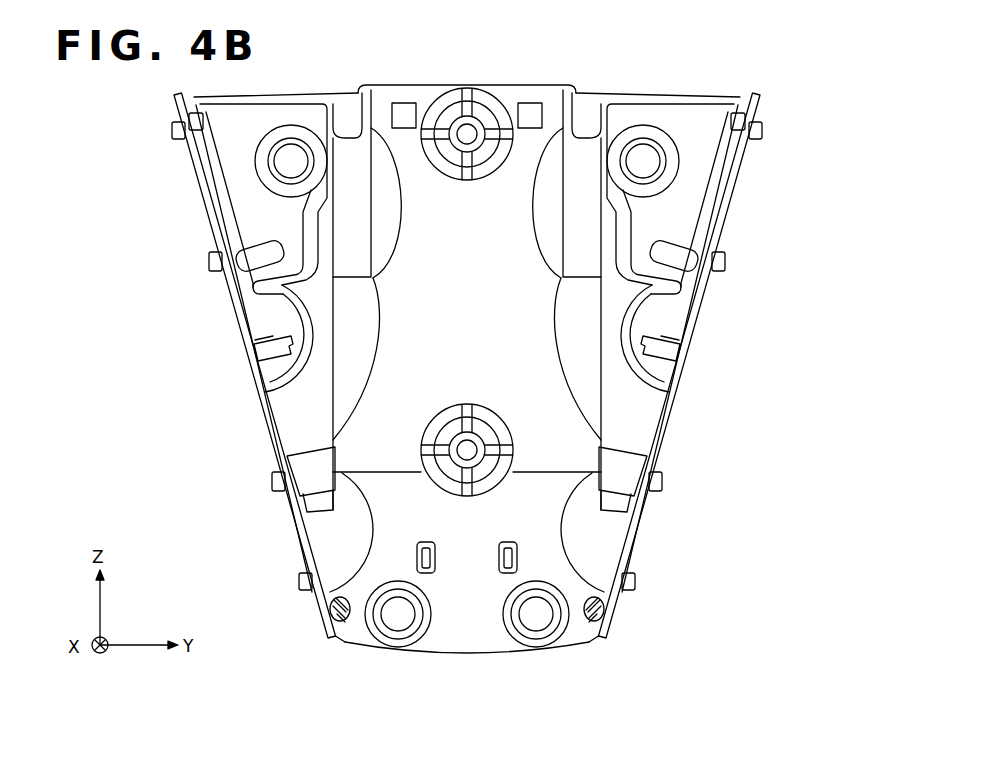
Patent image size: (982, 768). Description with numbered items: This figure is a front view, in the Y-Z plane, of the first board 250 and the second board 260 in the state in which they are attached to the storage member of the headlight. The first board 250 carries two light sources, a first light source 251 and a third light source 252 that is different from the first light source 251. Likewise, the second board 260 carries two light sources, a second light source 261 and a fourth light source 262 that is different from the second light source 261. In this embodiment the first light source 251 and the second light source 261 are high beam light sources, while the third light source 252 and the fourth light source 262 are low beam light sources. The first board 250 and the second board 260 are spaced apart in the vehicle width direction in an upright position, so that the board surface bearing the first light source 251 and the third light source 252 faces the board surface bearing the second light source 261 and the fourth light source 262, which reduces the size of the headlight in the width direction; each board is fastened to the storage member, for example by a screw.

The first board 250 is at (245, 331).
The first light source 251 is at (312, 463).
The third light source 252 is at (242, 254).
The second board 260 is at (689, 331).
The second light source 261 is at (622, 463).
The fourth light source 262 is at (692, 254).